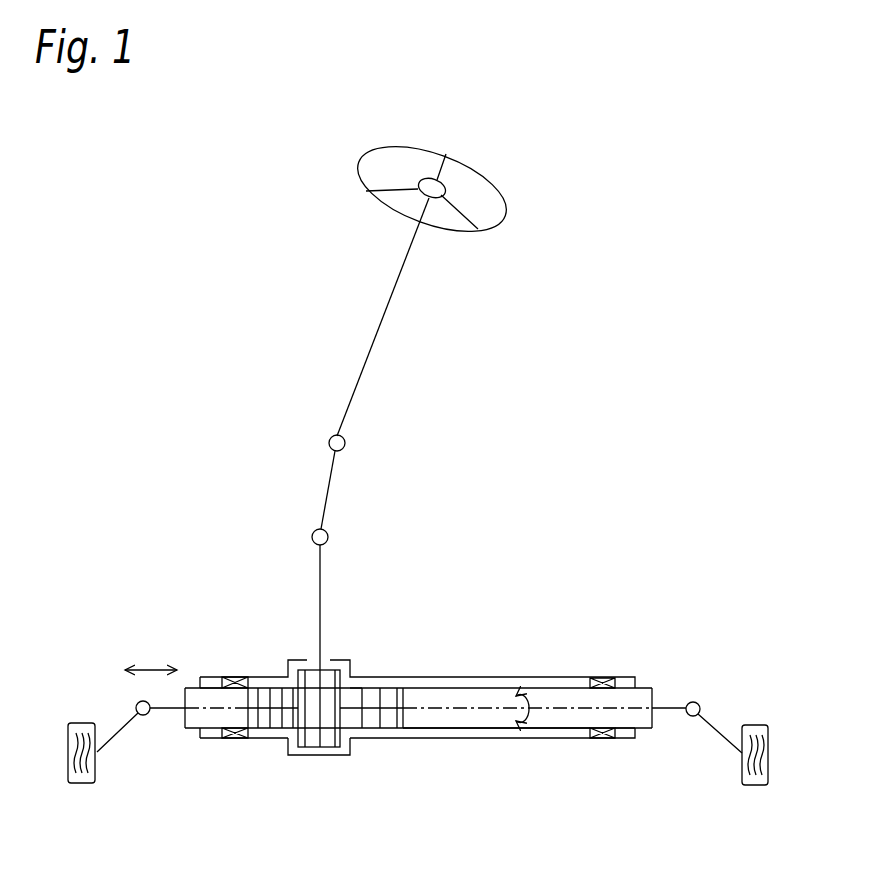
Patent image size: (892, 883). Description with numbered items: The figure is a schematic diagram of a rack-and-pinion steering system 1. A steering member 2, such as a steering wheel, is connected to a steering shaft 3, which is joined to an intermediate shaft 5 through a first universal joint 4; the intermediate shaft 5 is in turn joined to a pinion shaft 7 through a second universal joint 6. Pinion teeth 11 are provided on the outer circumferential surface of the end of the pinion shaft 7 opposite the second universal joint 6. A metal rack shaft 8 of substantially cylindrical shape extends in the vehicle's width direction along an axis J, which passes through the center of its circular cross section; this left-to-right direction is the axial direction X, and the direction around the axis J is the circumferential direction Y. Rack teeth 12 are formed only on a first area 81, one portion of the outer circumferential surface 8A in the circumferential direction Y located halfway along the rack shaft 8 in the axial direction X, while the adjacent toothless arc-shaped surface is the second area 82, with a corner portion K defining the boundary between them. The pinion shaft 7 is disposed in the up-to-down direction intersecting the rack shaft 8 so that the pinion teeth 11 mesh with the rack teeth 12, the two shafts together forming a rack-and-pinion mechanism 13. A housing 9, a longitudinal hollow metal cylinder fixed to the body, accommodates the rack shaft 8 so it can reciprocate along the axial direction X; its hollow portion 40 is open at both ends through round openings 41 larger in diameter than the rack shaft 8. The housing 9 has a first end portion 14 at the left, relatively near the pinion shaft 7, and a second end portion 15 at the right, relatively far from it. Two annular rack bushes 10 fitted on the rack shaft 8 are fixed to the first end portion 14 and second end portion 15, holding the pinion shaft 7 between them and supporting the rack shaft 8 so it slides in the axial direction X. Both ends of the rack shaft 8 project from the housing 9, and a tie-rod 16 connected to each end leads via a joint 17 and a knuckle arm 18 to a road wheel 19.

The steering system 1 is at (221, 276).
The steering member 2 is at (393, 143).
The steering shaft 3 is at (375, 342).
The first universal joint 4 is at (329, 440).
The intermediate shaft 5 is at (325, 491).
The second universal joint 6 is at (312, 536).
The pinion shaft 7 is at (318, 596).
The rack shaft 8 is at (428, 690).
The outer circumferential surface 8A is at (418, 729).
The housing 9 is at (484, 676).
The rack bushes 10 is at (600, 678).
The pinion teeth 11 is at (320, 747).
The rack teeth 12 is at (375, 740).
The rack-and-pinion mechanism 13 is at (273, 733).
The first end portion 14 is at (205, 738).
The second end portion 15 is at (630, 740).
The tie-rod 16 is at (165, 713).
The joint 17 is at (136, 706).
The knuckle arm 18 is at (118, 736).
The road wheel 19 is at (80, 784).
The hollow portion 40 is at (540, 740).
The openings 41 is at (197, 690).
The first area 81 is at (362, 690).
The second area 82 is at (238, 690).
The axis J is at (468, 713).
The corner portion K is at (240, 740).
The axial direction X is at (150, 668).
The circumferential direction Y is at (528, 696).